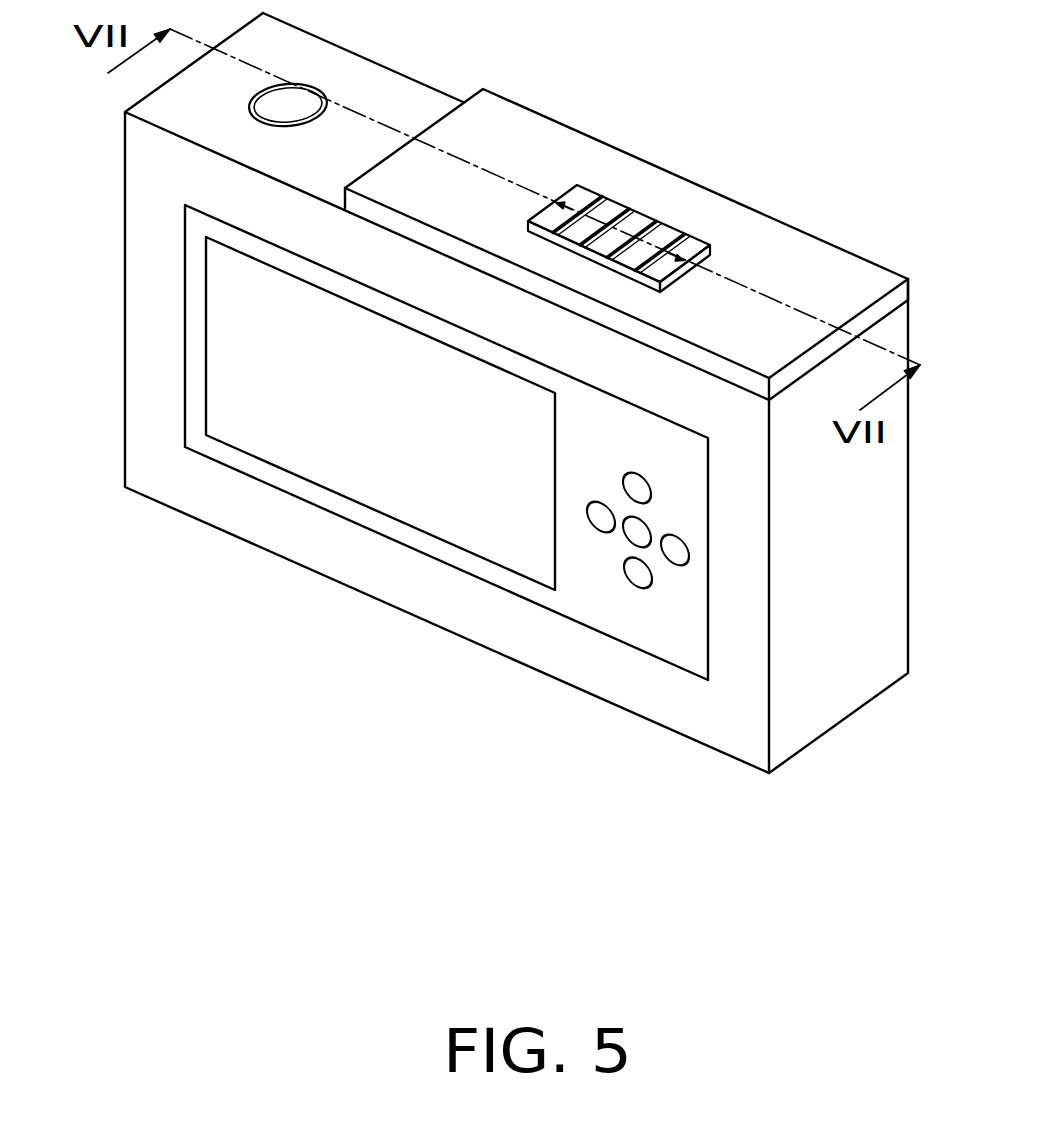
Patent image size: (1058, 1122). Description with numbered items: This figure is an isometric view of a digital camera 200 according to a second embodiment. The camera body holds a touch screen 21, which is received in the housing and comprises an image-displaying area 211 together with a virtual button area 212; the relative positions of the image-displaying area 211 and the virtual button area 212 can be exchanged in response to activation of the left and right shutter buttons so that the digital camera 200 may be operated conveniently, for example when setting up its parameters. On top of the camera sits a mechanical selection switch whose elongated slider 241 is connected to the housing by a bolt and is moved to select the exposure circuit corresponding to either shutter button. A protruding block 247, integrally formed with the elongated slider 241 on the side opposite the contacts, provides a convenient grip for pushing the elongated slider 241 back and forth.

The digital camera 200 is at (636, 64).
The elongated slider 241 is at (793, 258).
The protruding block 247 is at (633, 218).
The touch screen 21 is at (438, 445).
The image-displaying area 211 is at (387, 455).
The virtual button area 212 is at (253, 400).